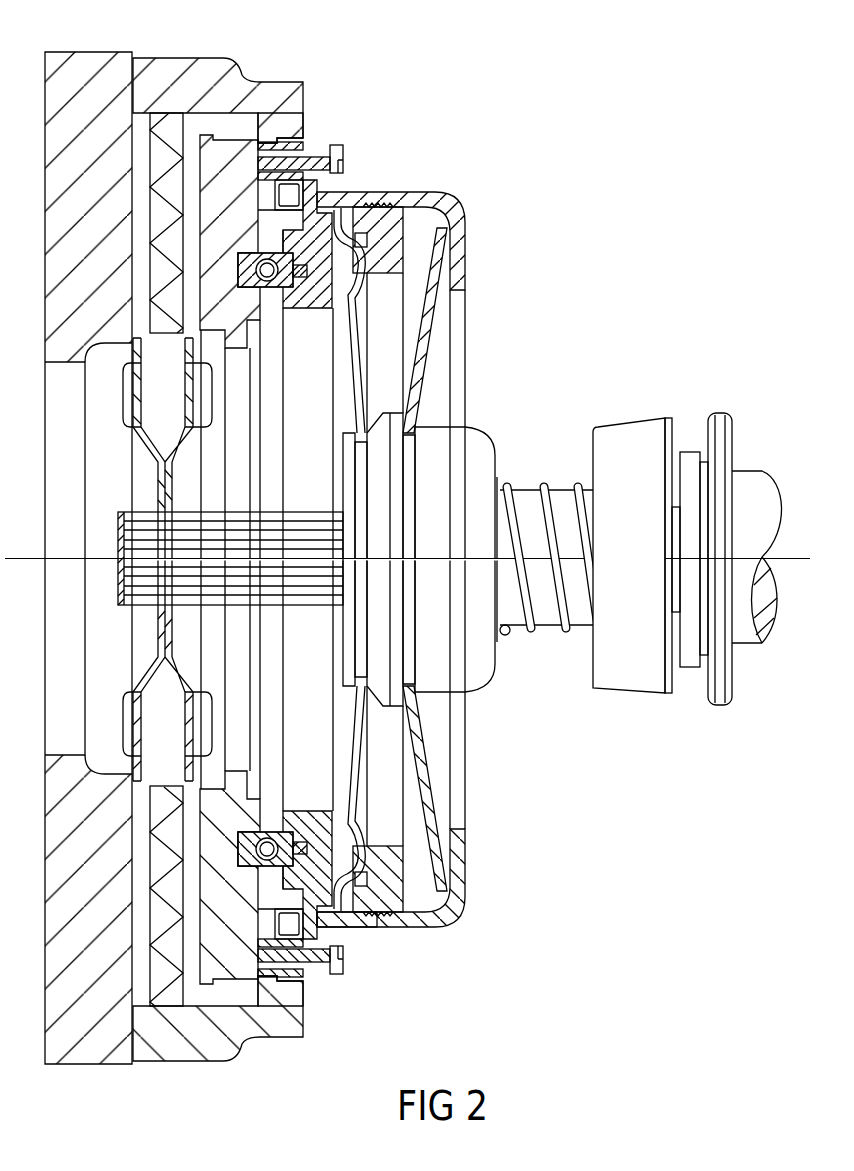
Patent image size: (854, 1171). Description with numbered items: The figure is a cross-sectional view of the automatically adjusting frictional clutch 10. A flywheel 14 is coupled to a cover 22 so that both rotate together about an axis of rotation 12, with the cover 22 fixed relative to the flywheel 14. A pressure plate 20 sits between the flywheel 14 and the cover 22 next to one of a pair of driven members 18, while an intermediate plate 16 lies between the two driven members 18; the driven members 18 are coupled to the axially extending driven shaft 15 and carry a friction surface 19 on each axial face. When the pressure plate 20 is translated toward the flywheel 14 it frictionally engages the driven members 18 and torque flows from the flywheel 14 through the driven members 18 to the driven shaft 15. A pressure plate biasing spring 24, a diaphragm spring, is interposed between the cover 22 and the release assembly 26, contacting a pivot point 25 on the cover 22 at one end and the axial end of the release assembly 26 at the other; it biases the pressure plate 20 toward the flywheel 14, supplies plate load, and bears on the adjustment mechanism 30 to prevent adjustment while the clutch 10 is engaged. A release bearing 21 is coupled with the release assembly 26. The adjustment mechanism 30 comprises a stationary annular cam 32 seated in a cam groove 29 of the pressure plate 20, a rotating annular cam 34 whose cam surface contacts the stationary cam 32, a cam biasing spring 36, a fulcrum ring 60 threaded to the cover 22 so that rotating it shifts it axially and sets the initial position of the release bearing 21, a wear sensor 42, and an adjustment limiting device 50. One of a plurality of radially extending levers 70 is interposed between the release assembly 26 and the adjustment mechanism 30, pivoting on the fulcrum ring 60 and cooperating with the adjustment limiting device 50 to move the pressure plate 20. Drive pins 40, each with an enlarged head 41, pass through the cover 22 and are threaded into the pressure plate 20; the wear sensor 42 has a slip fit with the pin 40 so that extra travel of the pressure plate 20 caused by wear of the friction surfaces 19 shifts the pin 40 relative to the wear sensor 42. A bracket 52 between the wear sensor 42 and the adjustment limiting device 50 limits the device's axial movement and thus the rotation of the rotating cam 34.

The frictional clutch 10 is at (511, 178).
The axis of rotation 12 is at (793, 558).
The flywheel 14 is at (82, 67).
The driven shaft 15 is at (125, 583).
The intermediate plate 16 is at (165, 115).
The driven members 18 is at (190, 188).
The friction surface 19 is at (185, 903).
The pressure plate 20 is at (270, 150).
The release bearing 21 is at (620, 422).
The cover 22 is at (207, 62).
The pressure plate biasing spring 24 is at (428, 323).
The pivot point 25 is at (443, 890).
The release assembly 26 is at (507, 421).
The cam groove 29 is at (305, 913).
The adjustment mechanism 30 is at (412, 947).
The stationary annular cam 32 is at (250, 835).
The rotating annular cam 34 is at (292, 835).
The cam biasing spring 36 is at (260, 288).
The drive pin 40 is at (320, 167).
The enlarged head 41 is at (340, 172).
The wear sensor 42 is at (308, 158).
The adjustment limiting device 50 is at (318, 303).
The bracket 52 is at (313, 213).
The fulcrum ring 60 is at (402, 898).
The lever 70 is at (357, 757).